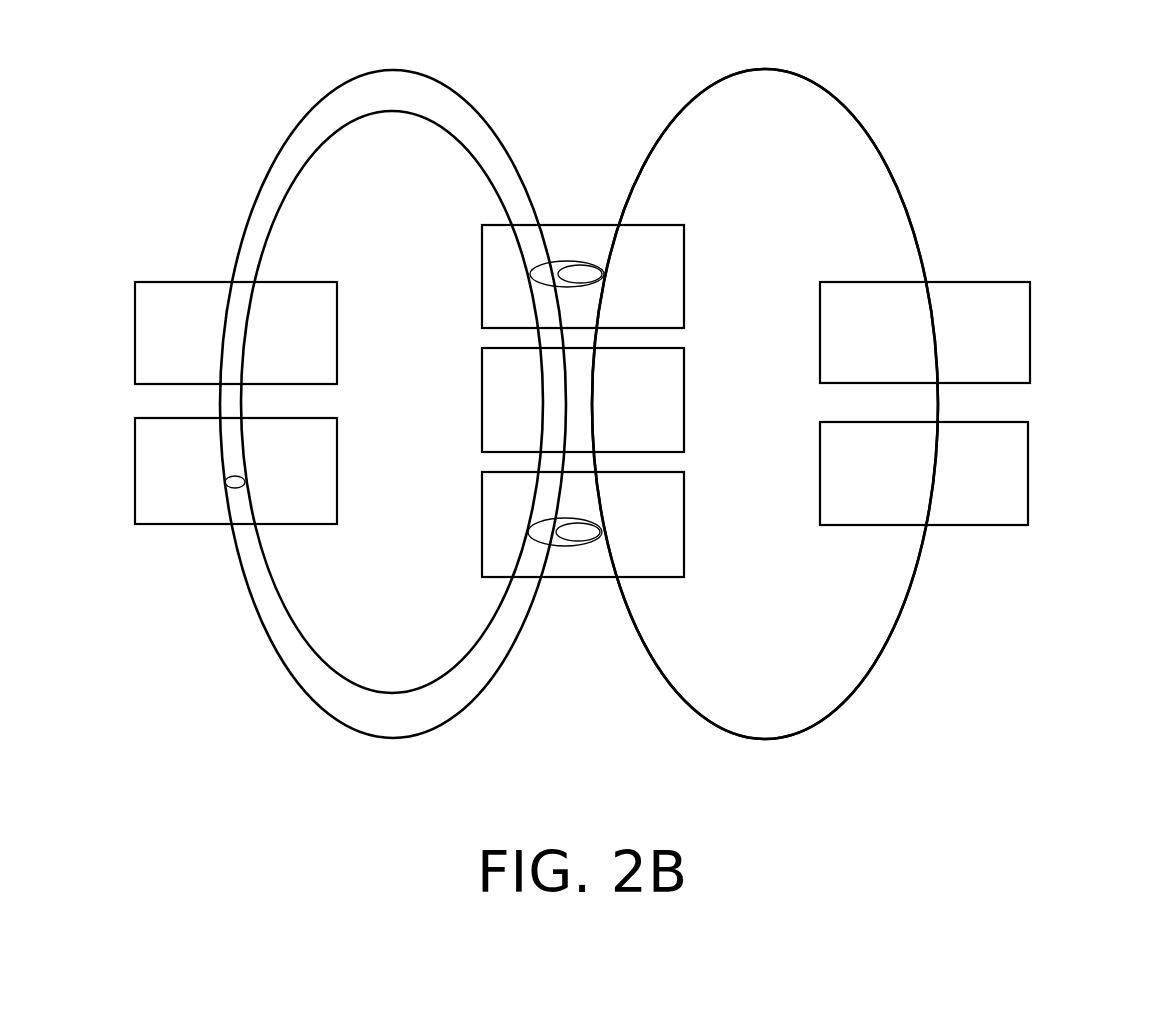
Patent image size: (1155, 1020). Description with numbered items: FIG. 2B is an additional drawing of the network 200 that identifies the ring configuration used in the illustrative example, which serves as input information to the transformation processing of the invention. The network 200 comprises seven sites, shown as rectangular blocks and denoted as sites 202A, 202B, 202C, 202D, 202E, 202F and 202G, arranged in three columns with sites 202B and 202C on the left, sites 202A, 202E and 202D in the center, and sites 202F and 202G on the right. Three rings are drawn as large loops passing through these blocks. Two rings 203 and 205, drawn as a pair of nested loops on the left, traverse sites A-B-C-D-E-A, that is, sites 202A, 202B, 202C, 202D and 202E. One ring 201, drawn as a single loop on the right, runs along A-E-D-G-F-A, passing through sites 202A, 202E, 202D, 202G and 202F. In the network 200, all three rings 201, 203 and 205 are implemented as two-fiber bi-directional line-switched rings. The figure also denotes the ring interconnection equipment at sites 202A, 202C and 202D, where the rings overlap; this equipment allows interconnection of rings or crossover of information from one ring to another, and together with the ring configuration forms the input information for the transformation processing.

The network 200 is at (800, 208).
The ring 201 is at (908, 178).
The ring 203 is at (484, 55).
The ring 205 is at (314, 146).
The site 202A is at (570, 225).
The site 202B is at (183, 280).
The site 202C is at (171, 525).
The site 202D is at (572, 578).
The site 202E is at (480, 423).
The site 202F is at (992, 281).
The site 202G is at (973, 525).